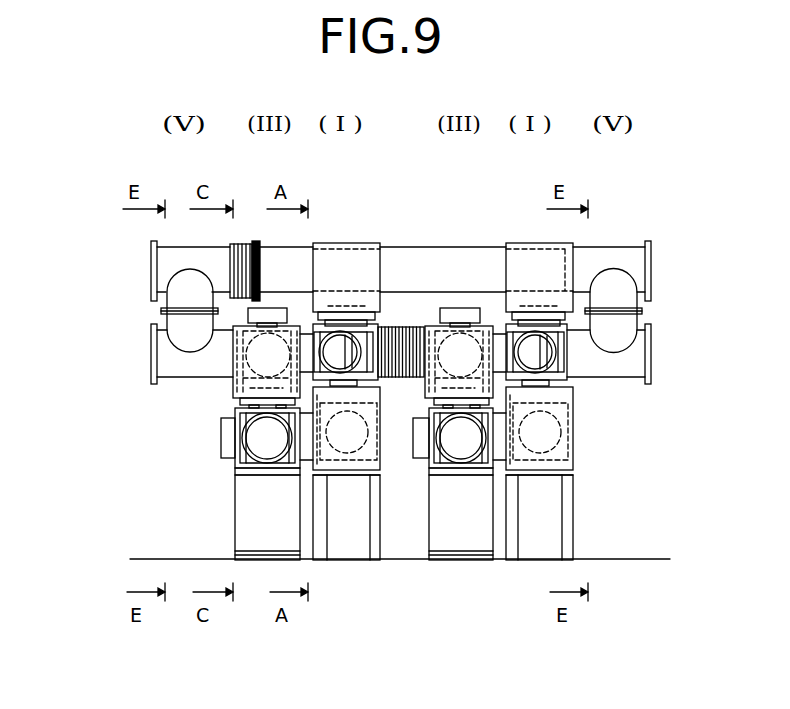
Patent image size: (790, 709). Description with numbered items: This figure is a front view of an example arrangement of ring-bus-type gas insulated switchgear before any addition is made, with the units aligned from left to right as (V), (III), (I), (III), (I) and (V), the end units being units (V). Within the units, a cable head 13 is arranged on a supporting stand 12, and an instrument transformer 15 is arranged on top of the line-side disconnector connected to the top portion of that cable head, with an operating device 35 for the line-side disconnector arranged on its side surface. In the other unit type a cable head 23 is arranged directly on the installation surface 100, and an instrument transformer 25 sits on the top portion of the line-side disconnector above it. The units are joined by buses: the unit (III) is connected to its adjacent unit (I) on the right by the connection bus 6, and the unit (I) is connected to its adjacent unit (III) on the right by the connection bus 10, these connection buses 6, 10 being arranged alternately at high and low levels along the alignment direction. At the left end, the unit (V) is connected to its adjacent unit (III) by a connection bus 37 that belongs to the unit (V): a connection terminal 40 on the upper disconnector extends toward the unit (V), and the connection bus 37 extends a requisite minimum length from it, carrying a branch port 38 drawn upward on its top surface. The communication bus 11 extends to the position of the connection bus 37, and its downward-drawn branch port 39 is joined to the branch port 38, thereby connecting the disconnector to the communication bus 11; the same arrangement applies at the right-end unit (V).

The connection bus 6 is at (237, 468).
The connection bus 10 is at (398, 330).
The communication bus 11 is at (487, 262).
The supporting stand 12 is at (320, 532).
The cable head 13 is at (380, 400).
The instrument transformer 15 is at (366, 250).
The cable head 23 is at (238, 540).
The instrument transformer 25 is at (234, 394).
The operating device 35 is at (305, 328).
The connection bus 37 is at (178, 362).
The branch port 38 is at (180, 335).
The branch port 39 is at (178, 298).
The connection terminal 40 is at (233, 348).
The installation surface 100 is at (647, 560).